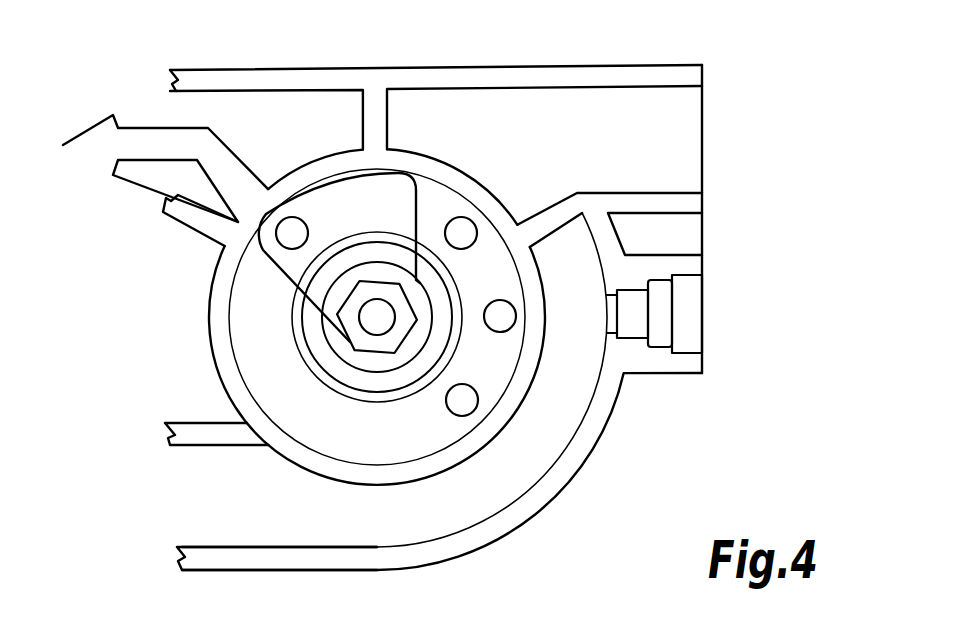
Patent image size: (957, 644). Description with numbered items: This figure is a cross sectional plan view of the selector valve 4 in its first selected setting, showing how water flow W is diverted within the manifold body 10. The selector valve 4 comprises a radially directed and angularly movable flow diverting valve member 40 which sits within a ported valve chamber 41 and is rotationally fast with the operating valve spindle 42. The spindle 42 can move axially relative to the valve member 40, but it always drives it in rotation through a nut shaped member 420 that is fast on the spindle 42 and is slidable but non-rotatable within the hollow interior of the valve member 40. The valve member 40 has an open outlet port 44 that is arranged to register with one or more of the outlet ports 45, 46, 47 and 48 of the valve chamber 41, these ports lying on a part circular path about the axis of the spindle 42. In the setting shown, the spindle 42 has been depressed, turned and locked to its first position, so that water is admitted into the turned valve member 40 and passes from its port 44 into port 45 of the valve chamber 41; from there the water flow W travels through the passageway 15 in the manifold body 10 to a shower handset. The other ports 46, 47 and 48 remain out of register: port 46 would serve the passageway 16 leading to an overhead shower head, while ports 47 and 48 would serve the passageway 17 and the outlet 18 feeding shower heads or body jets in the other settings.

The selector valve 4 is at (357, 280).
The manifold body 10 is at (560, 75).
The passageway 15 is at (318, 112).
The passageway 16 is at (733, 121).
The passageway 17 is at (503, 567).
The outlet 18 is at (735, 314).
The flow diverting valve member 40 is at (330, 333).
The valve chamber 41 is at (232, 388).
The valve spindle 42 is at (388, 423).
The nut shaped member 420 is at (306, 394).
The outlet port 44 is at (339, 257).
The outlet port 45 is at (293, 218).
The outlet port 46 is at (510, 178).
The outlet port 47 is at (567, 312).
The outlet port 48 is at (512, 451).
The water flow W is at (143, 140).